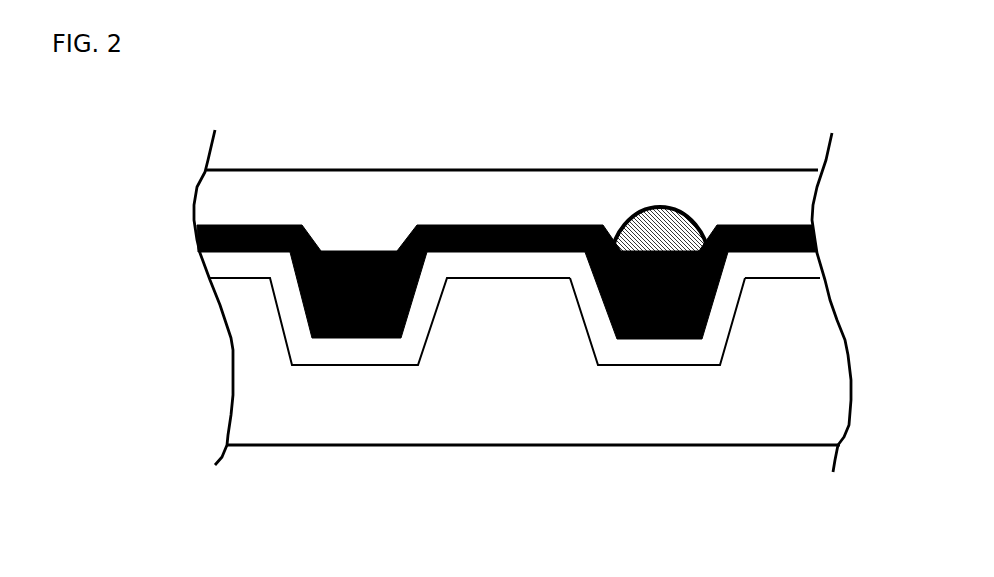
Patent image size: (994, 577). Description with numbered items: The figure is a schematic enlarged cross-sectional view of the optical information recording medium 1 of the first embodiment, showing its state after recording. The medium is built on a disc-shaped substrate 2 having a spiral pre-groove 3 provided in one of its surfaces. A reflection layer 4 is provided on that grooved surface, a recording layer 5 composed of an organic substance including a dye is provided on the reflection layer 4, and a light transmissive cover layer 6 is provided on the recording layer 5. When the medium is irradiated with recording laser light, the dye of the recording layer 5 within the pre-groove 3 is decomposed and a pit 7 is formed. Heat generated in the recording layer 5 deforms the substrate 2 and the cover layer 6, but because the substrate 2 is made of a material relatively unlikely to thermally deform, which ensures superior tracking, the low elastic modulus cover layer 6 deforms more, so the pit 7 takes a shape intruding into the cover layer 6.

The optical information recording medium 1 is at (527, 150).
The substrate 2 is at (773, 377).
The pre-groove 3 is at (638, 368).
The reflection layer 4 is at (792, 272).
The recording layer 5 is at (810, 230).
The cover layer 6 is at (802, 202).
The pit 7 is at (654, 238).